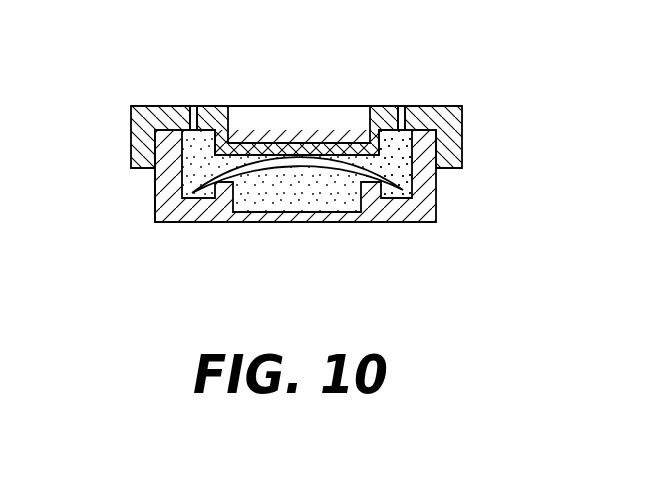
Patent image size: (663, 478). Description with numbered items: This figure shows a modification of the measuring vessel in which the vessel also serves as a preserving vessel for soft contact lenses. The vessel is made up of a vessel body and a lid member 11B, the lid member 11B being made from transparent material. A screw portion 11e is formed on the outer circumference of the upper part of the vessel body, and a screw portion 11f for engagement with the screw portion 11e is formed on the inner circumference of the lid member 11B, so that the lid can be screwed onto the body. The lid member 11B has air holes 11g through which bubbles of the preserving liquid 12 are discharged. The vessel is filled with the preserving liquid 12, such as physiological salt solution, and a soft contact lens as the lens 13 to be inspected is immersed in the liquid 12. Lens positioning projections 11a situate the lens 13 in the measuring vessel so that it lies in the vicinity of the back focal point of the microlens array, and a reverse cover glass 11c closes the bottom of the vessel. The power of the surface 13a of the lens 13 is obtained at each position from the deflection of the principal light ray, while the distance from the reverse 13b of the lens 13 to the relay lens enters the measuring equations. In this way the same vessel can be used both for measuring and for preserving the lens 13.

The lens positioning projections 11a is at (226, 182).
The lid member 11B is at (285, 110).
The reverse cover glass 11c is at (323, 214).
The screw portion 11e is at (430, 135).
The screw portion 11f is at (160, 172).
The air holes 11g is at (190, 106).
The preserving liquid 12 is at (348, 204).
The lens 13 is at (307, 160).
The surface of the lens 13a is at (407, 168).
The reverse of the lens 13b is at (298, 205).